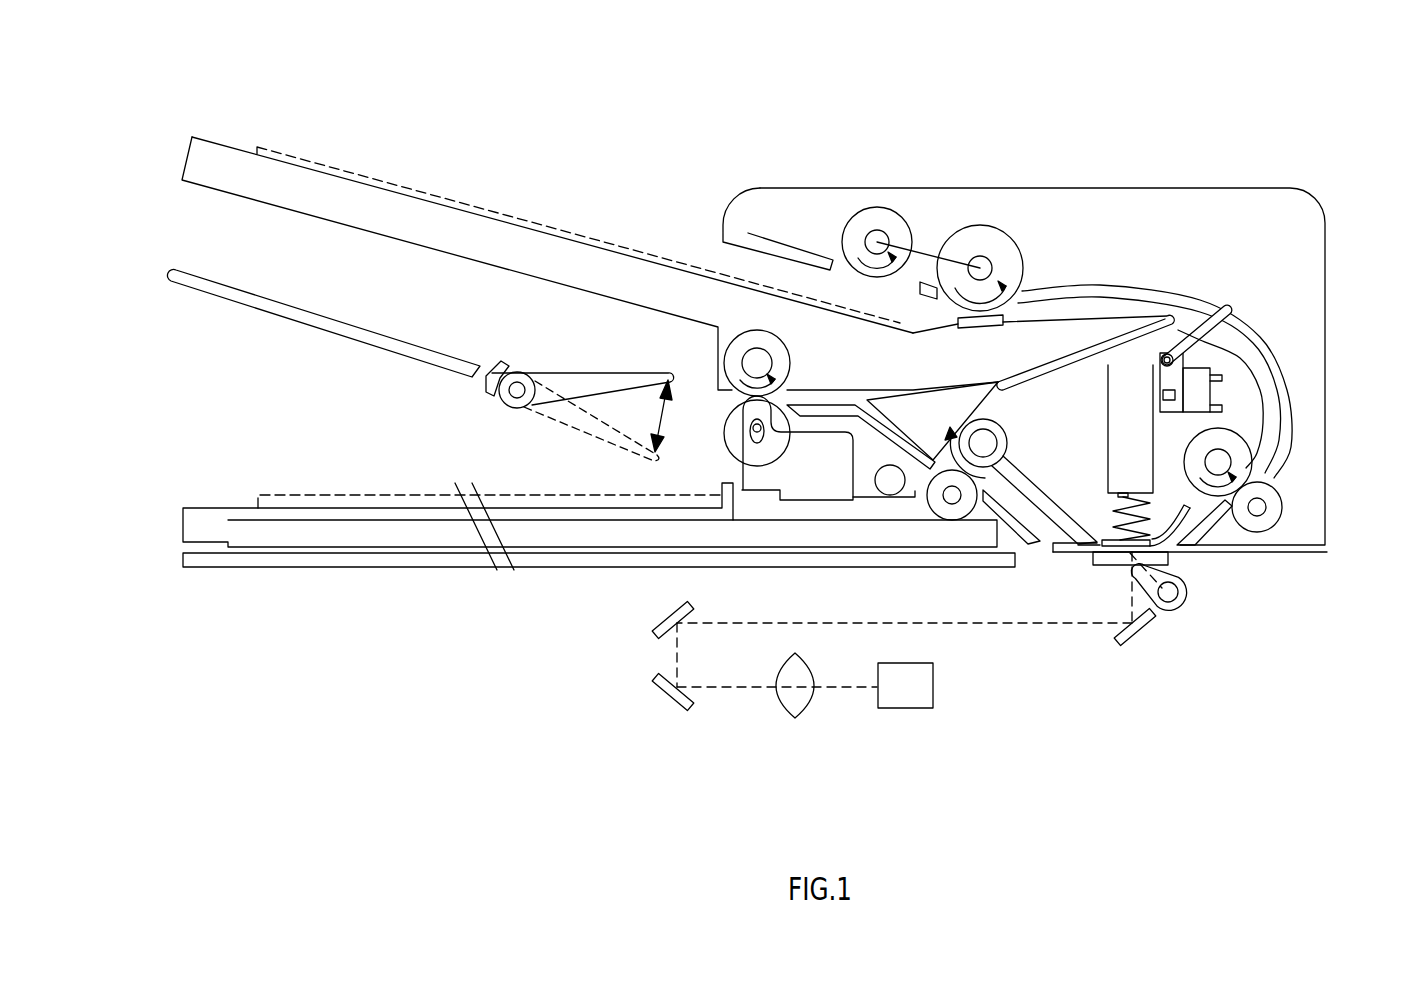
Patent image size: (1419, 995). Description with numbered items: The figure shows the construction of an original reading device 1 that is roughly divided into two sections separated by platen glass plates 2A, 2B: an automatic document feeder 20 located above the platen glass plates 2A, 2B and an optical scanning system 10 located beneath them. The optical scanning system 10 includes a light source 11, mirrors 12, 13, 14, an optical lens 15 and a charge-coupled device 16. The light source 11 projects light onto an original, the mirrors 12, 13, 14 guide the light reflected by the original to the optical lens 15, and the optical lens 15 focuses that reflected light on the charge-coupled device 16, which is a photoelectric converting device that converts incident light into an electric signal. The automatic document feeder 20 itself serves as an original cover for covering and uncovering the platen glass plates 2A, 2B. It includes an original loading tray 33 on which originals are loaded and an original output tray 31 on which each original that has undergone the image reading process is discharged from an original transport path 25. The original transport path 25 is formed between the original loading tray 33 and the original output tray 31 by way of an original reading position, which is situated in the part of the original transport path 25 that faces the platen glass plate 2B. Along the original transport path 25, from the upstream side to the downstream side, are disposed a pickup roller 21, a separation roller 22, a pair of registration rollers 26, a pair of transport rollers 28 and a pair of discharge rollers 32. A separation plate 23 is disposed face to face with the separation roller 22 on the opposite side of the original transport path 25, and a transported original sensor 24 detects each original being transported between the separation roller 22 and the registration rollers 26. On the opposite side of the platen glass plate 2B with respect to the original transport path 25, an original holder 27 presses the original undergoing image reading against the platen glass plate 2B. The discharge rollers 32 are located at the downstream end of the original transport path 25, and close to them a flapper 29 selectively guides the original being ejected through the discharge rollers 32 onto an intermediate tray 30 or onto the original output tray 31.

The original reading device 1 is at (1168, 106).
The optical scanning system 10 is at (1340, 573).
The light source 11 is at (1188, 592).
The mirror 12 is at (1138, 639).
The mirror 13 is at (655, 622).
The mirror 14 is at (655, 688).
The optical lens 15 is at (781, 705).
The charge-coupled device (CCD) 16 is at (878, 707).
The automatic document feeder 20 is at (1340, 178).
The pickup roller 21 is at (870, 207).
The separation roller 22 is at (987, 225).
The separation plate 23 is at (958, 327).
The transported original sensor 24 is at (1229, 309).
The original transport path 25 is at (1247, 350).
The pair of registration rollers 26 is at (1283, 509).
The original holder 27 is at (1035, 487).
The pair of transport rollers 28 is at (1010, 420).
The flapper 29 is at (585, 372).
The platen glass plate 2A is at (340, 568).
The platen glass plate 2B is at (1093, 563).
The intermediate tray 30 is at (330, 318).
The original output tray 31 is at (208, 507).
The pair of discharge rollers 32 is at (750, 330).
The original loading tray 33 is at (228, 152).